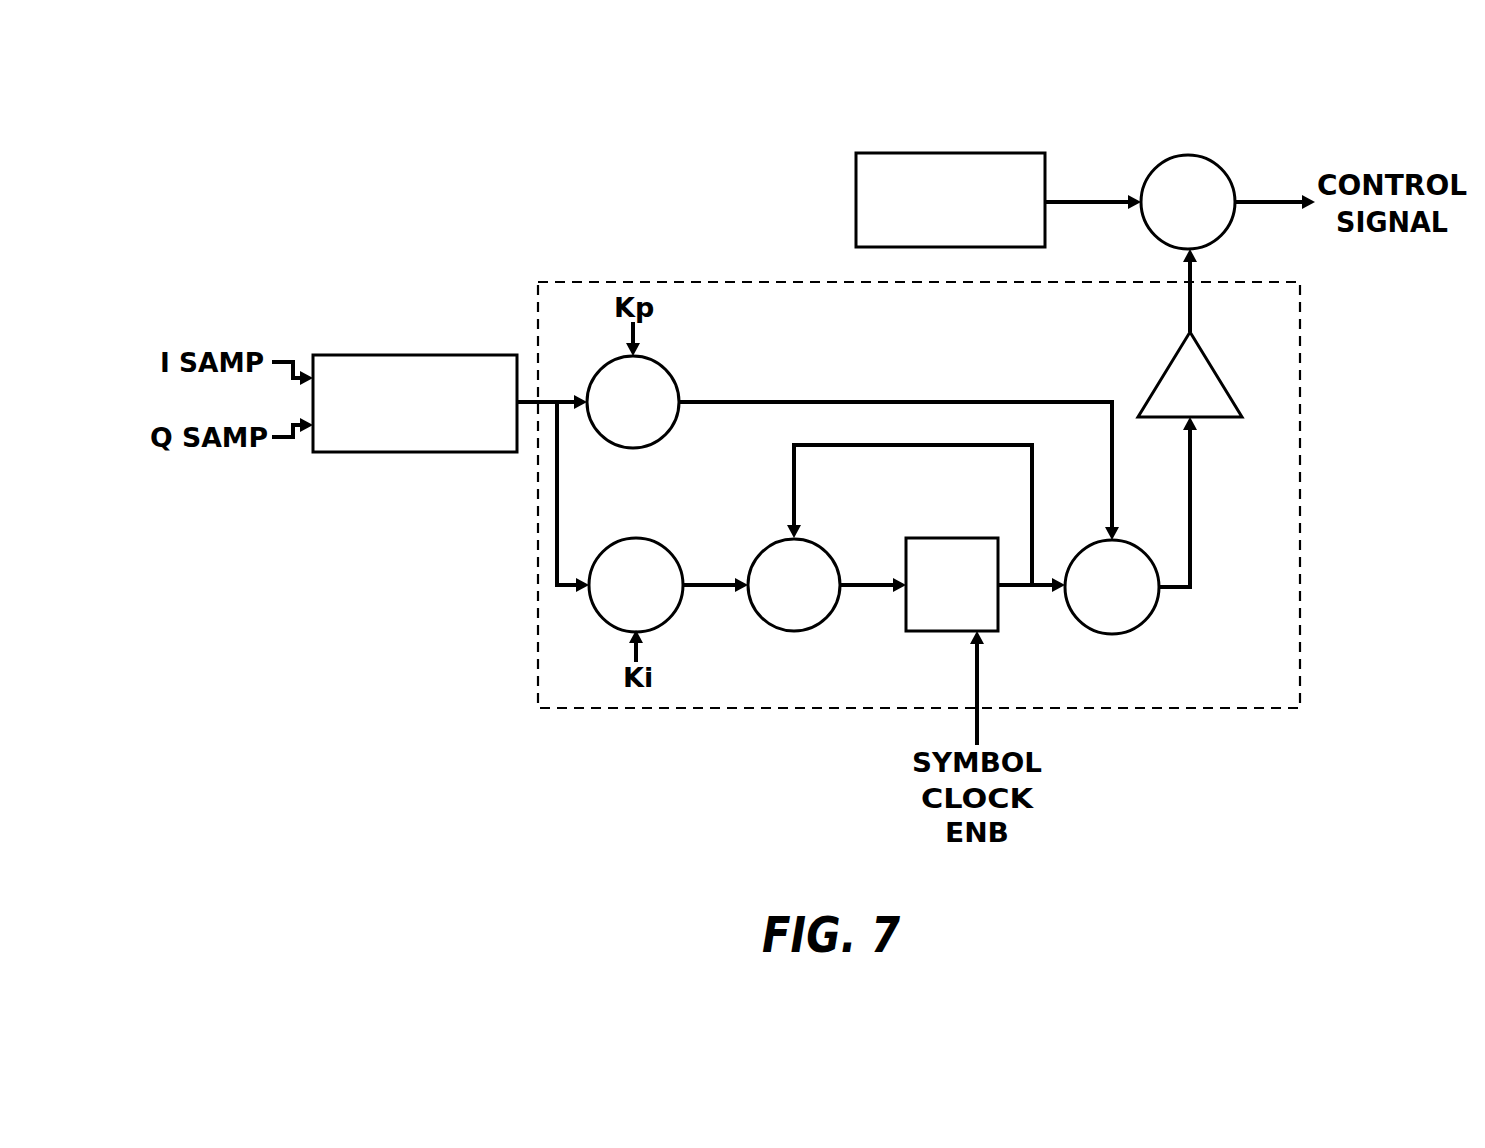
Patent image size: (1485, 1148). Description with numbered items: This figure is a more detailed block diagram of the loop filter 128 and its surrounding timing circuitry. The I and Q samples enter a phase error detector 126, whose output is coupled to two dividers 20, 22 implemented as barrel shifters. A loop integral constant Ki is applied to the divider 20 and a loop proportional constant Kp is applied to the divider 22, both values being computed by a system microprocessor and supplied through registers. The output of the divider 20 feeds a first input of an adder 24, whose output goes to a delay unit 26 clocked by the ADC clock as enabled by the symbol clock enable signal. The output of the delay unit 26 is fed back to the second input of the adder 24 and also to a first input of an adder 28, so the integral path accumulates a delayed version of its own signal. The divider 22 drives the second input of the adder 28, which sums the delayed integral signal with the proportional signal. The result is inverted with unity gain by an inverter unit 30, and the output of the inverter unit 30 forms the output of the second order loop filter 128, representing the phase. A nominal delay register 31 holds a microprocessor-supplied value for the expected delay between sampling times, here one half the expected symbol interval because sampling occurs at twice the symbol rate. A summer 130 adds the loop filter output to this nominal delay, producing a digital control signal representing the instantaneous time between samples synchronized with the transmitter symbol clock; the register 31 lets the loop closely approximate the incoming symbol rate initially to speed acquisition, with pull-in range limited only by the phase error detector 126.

The phase error detector 126 is at (413, 355).
The loop filter 128 is at (1302, 500).
The divider 20 is at (636, 538).
The divider 22 is at (652, 446).
The adder 24 is at (760, 550).
The delay unit 26 is at (950, 538).
The adder 28 is at (1090, 545).
The inverter unit 30 is at (1215, 370).
The nominal delay register 31 is at (950, 247).
The summer 130 is at (1222, 235).